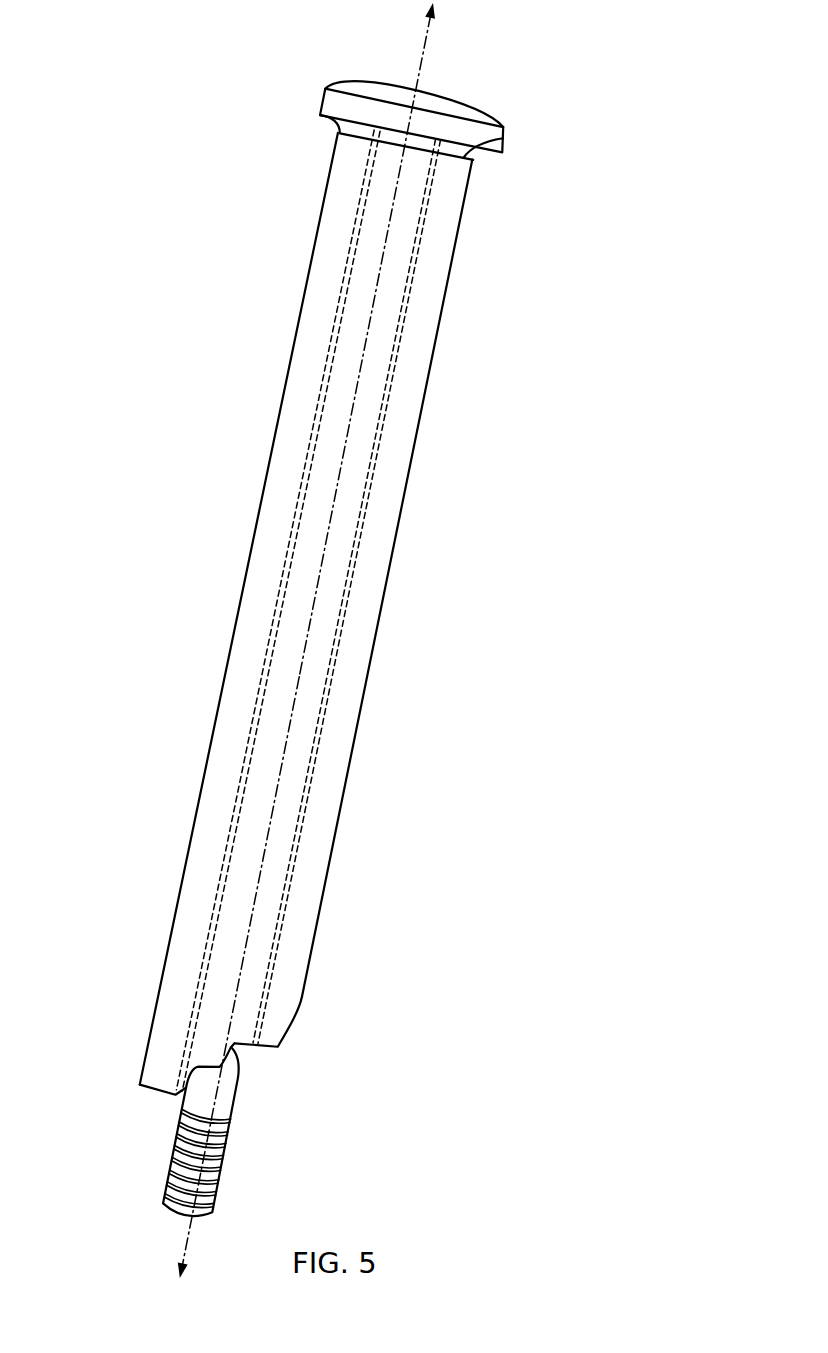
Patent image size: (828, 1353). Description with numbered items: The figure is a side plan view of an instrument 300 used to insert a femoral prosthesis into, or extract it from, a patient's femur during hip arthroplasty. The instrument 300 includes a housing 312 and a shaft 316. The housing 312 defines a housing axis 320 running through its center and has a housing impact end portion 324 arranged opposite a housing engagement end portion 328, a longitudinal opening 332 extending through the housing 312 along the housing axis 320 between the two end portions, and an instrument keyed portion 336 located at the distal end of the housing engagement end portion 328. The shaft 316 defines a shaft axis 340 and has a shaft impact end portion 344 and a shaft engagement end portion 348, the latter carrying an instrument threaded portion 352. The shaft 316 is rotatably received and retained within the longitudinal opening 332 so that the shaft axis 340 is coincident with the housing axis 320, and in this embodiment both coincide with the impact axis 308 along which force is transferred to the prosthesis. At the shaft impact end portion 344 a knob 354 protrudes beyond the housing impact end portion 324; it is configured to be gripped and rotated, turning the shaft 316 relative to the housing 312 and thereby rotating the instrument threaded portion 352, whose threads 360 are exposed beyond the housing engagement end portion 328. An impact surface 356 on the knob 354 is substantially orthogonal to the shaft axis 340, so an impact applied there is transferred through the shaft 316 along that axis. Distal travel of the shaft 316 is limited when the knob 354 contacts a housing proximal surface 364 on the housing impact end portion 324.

The instrument 300 is at (117, 221).
The impact axis 308 is at (363, 352).
The housing 312 is at (284, 400).
The shaft 316 is at (367, 257).
The housing axis 320 is at (310, 632).
The housing impact end portion 324 is at (447, 227).
The housing engagement end portion 328 is at (164, 975).
The longitudinal opening 332 is at (370, 218).
The instrument keyed portion 336 is at (163, 1083).
The shaft axis 340 is at (283, 752).
The shaft impact end portion 344 is at (375, 153).
The shaft engagement end portion 348 is at (254, 990).
The instrument threaded portion 352 is at (227, 1108).
The knob 354 is at (341, 105).
The impact surface 356 is at (463, 98).
The threads 360 is at (220, 1170).
The housing proximal surface 364 is at (503, 138).